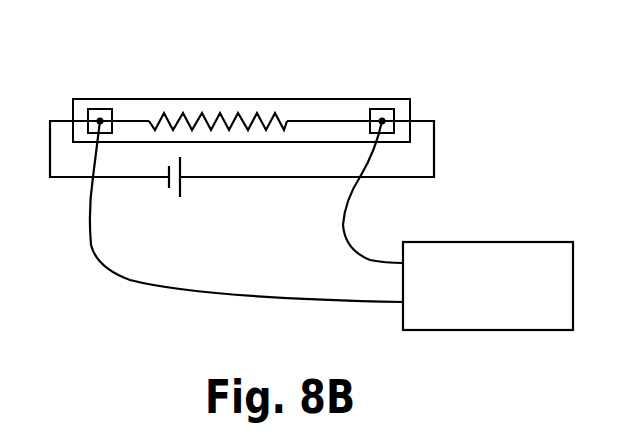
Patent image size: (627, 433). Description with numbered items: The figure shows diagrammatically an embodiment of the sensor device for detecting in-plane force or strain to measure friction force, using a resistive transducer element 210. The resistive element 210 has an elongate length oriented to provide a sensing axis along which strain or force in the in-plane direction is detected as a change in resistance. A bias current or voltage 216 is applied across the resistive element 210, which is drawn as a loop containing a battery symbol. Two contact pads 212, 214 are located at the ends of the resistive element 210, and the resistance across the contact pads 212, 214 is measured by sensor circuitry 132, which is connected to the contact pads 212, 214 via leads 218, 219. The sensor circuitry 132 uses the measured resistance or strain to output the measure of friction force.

The sensor circuitry 132 is at (507, 242).
The resistive transducer element 210 is at (309, 119).
The contact pad 212 is at (100, 121).
The contact pad 214 is at (382, 121).
The bias current or voltage 216 is at (434, 150).
The lead 218 is at (97, 239).
The lead 219 is at (345, 213).